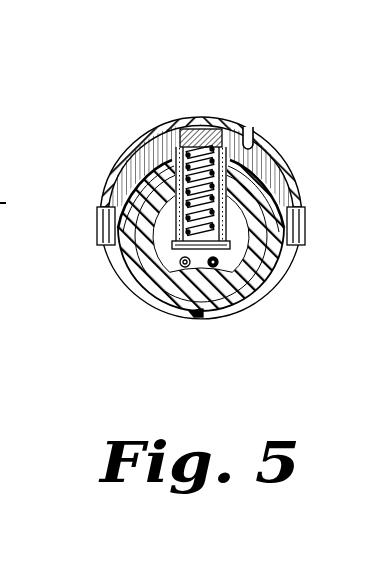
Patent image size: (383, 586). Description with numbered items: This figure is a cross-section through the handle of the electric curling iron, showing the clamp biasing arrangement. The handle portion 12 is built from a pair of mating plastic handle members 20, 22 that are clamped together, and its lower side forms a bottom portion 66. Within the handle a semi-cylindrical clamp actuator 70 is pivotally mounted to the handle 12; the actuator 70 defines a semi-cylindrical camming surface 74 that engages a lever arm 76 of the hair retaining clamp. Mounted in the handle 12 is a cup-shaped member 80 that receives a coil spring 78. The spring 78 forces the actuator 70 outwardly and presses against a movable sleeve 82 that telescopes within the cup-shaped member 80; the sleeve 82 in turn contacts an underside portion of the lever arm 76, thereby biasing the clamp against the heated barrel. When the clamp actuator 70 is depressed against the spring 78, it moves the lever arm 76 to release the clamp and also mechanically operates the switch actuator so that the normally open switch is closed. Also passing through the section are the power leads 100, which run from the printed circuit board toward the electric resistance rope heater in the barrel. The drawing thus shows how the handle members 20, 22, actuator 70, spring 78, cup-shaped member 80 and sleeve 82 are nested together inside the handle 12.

The handle portion 12 is at (151, 319).
The handle member 20 is at (118, 267).
The handle member 22 is at (266, 286).
The bottom portion 66 is at (212, 320).
The clamp actuator 70 is at (273, 142).
The camming surface 74 is at (248, 147).
The lever arm 76 is at (162, 137).
The coil spring 78 is at (178, 148).
The cup-shaped member 80 is at (286, 265).
The movable sleeve 82 is at (195, 122).
The power leads 100 is at (138, 285).